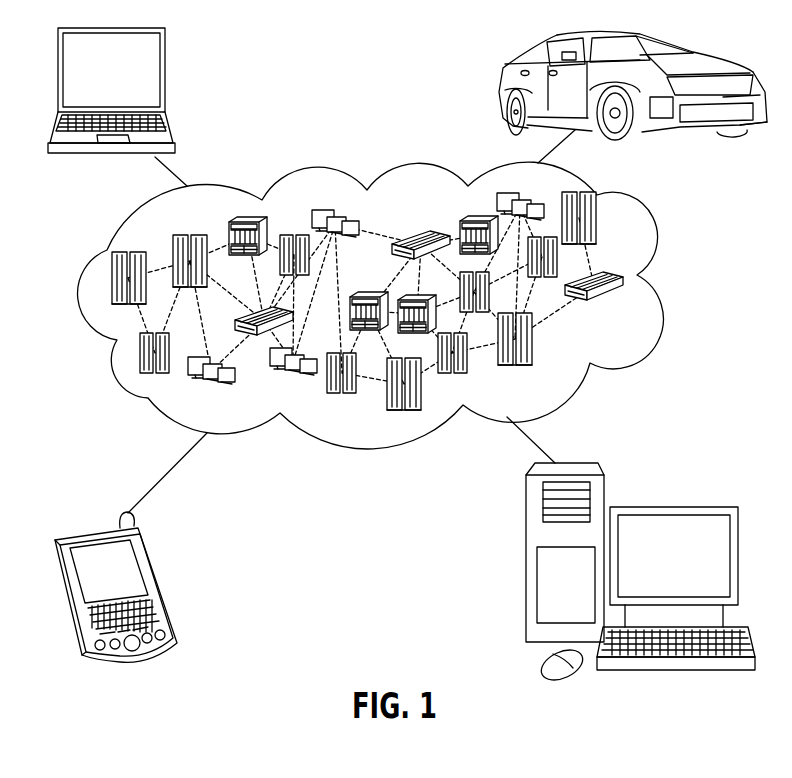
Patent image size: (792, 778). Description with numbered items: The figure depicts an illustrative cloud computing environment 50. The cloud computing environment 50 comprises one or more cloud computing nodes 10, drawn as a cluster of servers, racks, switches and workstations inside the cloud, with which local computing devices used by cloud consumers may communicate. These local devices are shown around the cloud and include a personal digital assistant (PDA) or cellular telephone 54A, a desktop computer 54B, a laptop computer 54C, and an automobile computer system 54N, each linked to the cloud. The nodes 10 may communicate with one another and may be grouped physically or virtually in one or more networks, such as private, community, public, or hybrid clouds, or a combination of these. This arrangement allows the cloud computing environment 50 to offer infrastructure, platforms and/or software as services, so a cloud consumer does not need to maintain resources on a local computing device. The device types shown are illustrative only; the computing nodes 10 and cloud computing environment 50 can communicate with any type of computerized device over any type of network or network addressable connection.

The cloud computing nodes 10 is at (627, 308).
The cloud computing environment 50 is at (672, 283).
The personal digital assistant or cellular telephone 54A is at (158, 582).
The desktop computer 54B is at (672, 506).
The laptop computer 54C is at (165, 76).
The automobile computer system 54N is at (498, 85).